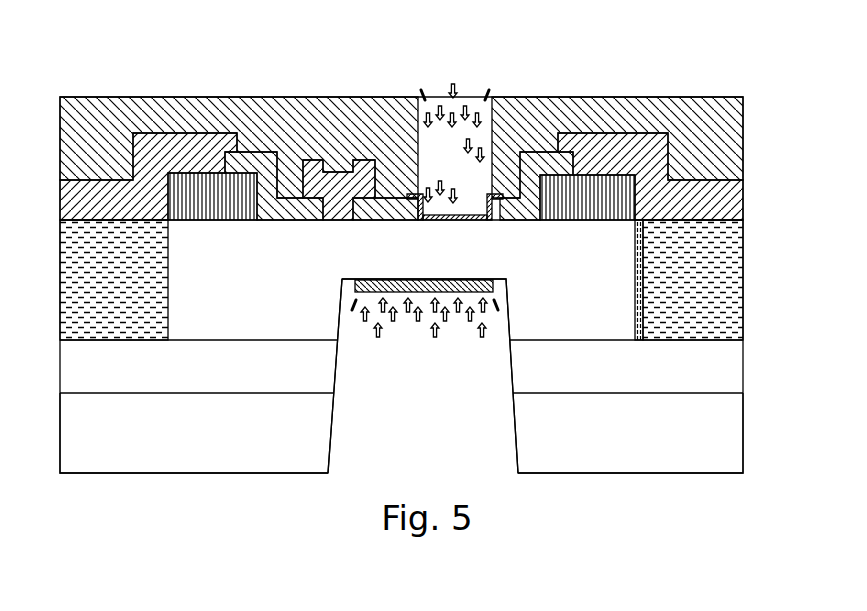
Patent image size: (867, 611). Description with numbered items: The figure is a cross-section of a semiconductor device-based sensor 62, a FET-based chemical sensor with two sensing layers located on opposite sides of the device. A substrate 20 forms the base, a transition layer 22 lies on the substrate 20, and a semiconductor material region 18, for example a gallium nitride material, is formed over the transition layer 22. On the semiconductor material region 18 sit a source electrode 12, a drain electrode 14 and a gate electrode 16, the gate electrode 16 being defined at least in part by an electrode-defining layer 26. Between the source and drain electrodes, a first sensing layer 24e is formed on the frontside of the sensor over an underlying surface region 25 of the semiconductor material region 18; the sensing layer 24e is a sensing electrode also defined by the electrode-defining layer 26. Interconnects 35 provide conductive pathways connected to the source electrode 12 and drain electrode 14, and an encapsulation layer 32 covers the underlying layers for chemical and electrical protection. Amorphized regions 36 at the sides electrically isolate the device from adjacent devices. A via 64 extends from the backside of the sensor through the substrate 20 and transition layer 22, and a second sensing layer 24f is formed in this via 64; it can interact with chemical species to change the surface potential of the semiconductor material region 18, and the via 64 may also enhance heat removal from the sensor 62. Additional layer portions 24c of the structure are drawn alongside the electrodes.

The semiconductor device-based sensor 62 is at (716, 82).
The encapsulation layer 32 is at (268, 128).
The interconnects 35 is at (173, 159).
The source electrode 12 is at (188, 208).
The drain electrode 14 is at (594, 208).
The gate electrode 16 is at (330, 196).
The spacer liner 24c is at (425, 221).
The first sensing layer 24e is at (467, 213).
The second sensing layer 24f is at (452, 279).
The surface region 25 is at (447, 242).
The electrode-defining layer 26 is at (283, 220).
The amorphized regions 36 is at (100, 292).
The semiconductor material region 18 is at (641, 279).
The transition layer 22 is at (196, 372).
The substrate 20 is at (195, 440).
The via 64 is at (508, 330).